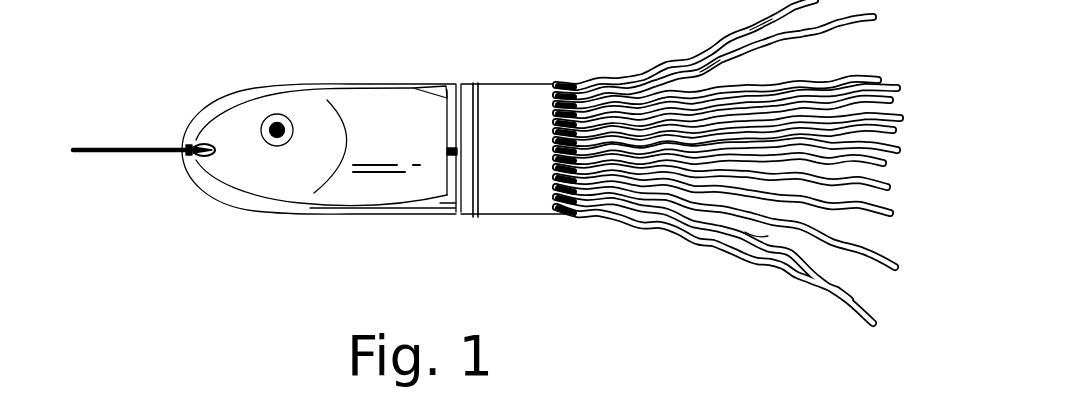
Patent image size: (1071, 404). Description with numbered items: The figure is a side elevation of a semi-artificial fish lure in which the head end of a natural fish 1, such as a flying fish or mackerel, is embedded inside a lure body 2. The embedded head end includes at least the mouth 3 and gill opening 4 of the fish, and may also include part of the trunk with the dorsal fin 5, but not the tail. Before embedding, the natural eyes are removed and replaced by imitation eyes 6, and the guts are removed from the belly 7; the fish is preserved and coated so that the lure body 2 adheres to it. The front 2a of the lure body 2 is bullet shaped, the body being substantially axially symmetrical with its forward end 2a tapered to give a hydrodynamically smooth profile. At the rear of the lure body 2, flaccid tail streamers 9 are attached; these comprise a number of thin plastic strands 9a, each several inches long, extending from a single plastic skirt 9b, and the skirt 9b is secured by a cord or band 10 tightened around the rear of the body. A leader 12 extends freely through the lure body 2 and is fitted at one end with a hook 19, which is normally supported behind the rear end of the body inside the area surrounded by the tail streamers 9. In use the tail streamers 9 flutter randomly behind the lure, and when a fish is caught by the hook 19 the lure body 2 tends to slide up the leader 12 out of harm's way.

The natural fish 1 is at (242, 125).
The lure body 2 is at (327, 76).
The front of the lure body 2a is at (215, 118).
The mouth 3 is at (200, 162).
The gill opening 4 is at (332, 182).
The dorsal fin 5 is at (434, 85).
The imitation eyes 6 is at (266, 127).
The belly 7 is at (378, 187).
The tail streamers 9 is at (623, 54).
The plastic strands 9a is at (750, 43).
The skirt 9b is at (520, 100).
The band 10 is at (478, 187).
The leader 12 is at (127, 153).
The hook 19 is at (747, 233).